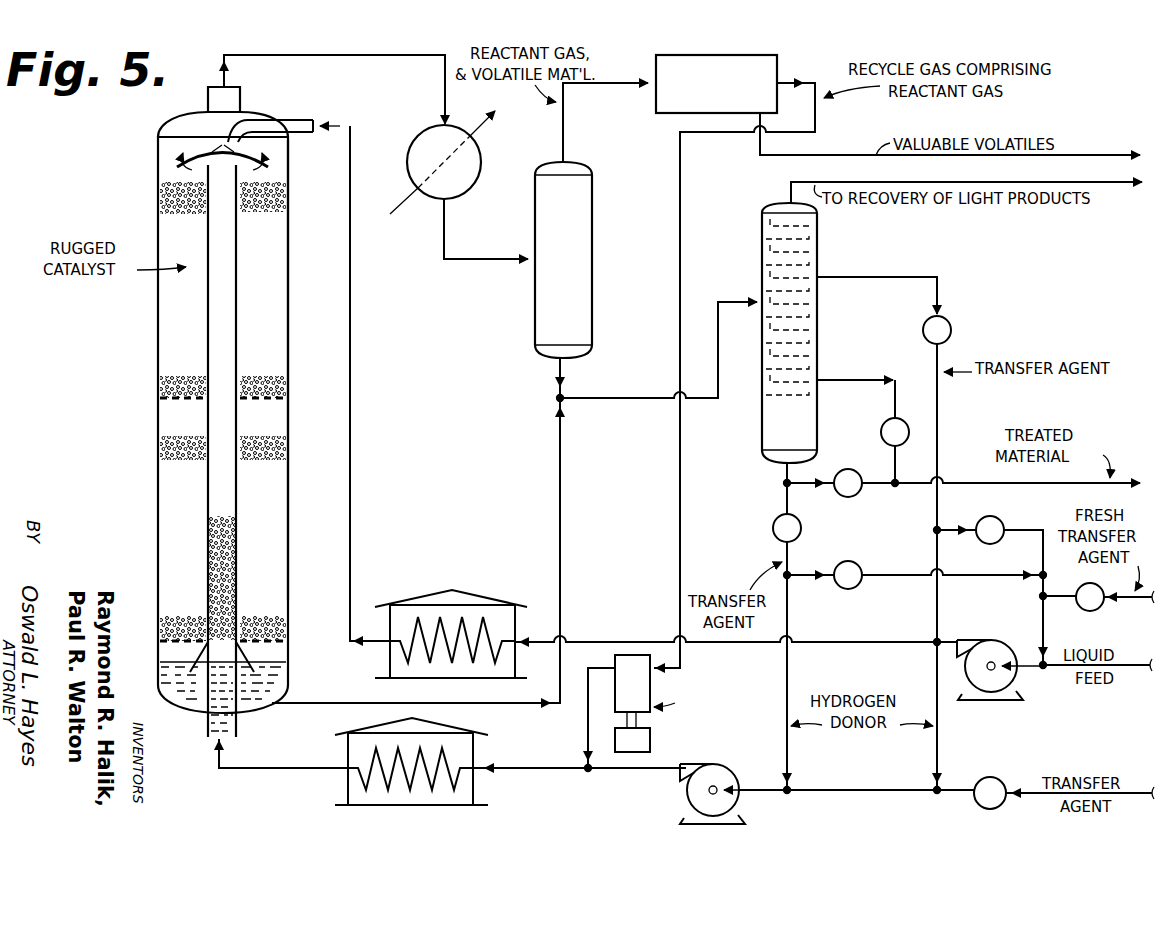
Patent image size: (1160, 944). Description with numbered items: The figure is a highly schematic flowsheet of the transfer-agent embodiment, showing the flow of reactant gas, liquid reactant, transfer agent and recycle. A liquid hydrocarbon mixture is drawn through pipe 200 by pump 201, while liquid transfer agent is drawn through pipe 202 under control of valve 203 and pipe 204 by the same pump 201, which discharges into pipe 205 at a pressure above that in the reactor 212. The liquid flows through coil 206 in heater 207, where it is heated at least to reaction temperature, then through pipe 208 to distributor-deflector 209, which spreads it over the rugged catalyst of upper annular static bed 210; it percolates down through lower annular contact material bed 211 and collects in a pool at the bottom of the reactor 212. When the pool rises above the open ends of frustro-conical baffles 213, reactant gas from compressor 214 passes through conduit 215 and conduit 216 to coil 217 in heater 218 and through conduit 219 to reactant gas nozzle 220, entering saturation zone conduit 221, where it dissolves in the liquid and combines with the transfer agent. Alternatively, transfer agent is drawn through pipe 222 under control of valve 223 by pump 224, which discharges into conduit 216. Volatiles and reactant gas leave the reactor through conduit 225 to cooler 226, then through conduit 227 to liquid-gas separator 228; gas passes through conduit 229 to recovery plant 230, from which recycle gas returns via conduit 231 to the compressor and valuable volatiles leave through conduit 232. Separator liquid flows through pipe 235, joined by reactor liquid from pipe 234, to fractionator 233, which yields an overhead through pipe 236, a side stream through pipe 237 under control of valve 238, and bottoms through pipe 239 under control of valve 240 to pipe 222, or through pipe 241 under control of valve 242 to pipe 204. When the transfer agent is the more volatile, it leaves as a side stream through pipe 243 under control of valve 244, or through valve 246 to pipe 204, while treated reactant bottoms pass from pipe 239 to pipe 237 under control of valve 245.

The pipe 200 is at (1064, 670).
The pump 201 is at (991, 682).
The pipe 202 is at (1143, 601).
The valve 203 is at (1080, 610).
The pipe 204 is at (1038, 550).
The pipe 205 is at (830, 648).
The coil 206 is at (437, 625).
The heater 207 is at (478, 599).
The pipe 208 is at (352, 430).
The distributor-deflector 209 is at (168, 160).
The upper annular static bed 210 is at (177, 311).
The lower annular contact material bed 211 is at (272, 513).
The reactor 212 is at (288, 325).
The frustro-conical baffles 213 is at (242, 666).
The compressor 214 is at (650, 737).
The conduit 215 is at (585, 733).
The conduit 216 is at (563, 772).
The coil 217 is at (352, 792).
The heater 218 is at (346, 750).
The conduit 219 is at (250, 770).
The reactant gas nozzle 220 is at (232, 728).
The saturation zone conduit 221 is at (207, 343).
The pipe 222 is at (1040, 801).
The valve 223 is at (996, 778).
The pump 224 is at (700, 776).
The conduit 225 is at (297, 57).
The cooler 226 is at (412, 148).
The conduit 227 is at (443, 247).
The liquid-gas separator 228 is at (598, 274).
The conduit 229 is at (567, 131).
The recovery plant 230 is at (781, 59).
The conduit 231 is at (682, 246).
The conduit 232 is at (780, 158).
The fractionator 233 is at (820, 318).
The pipe 234 is at (358, 703).
The pipe 235 is at (626, 396).
The pipe 236 is at (958, 188).
The pipe 237 is at (996, 483).
The valve 238 is at (910, 430).
The pipe 239 is at (783, 497).
The valve 240 is at (772, 530).
The pipe 241 is at (960, 578).
The valve 242 is at (849, 589).
The pipe 243 is at (919, 275).
The valve 244 is at (950, 318).
The valve 245 is at (852, 497).
The valve 246 is at (995, 517).